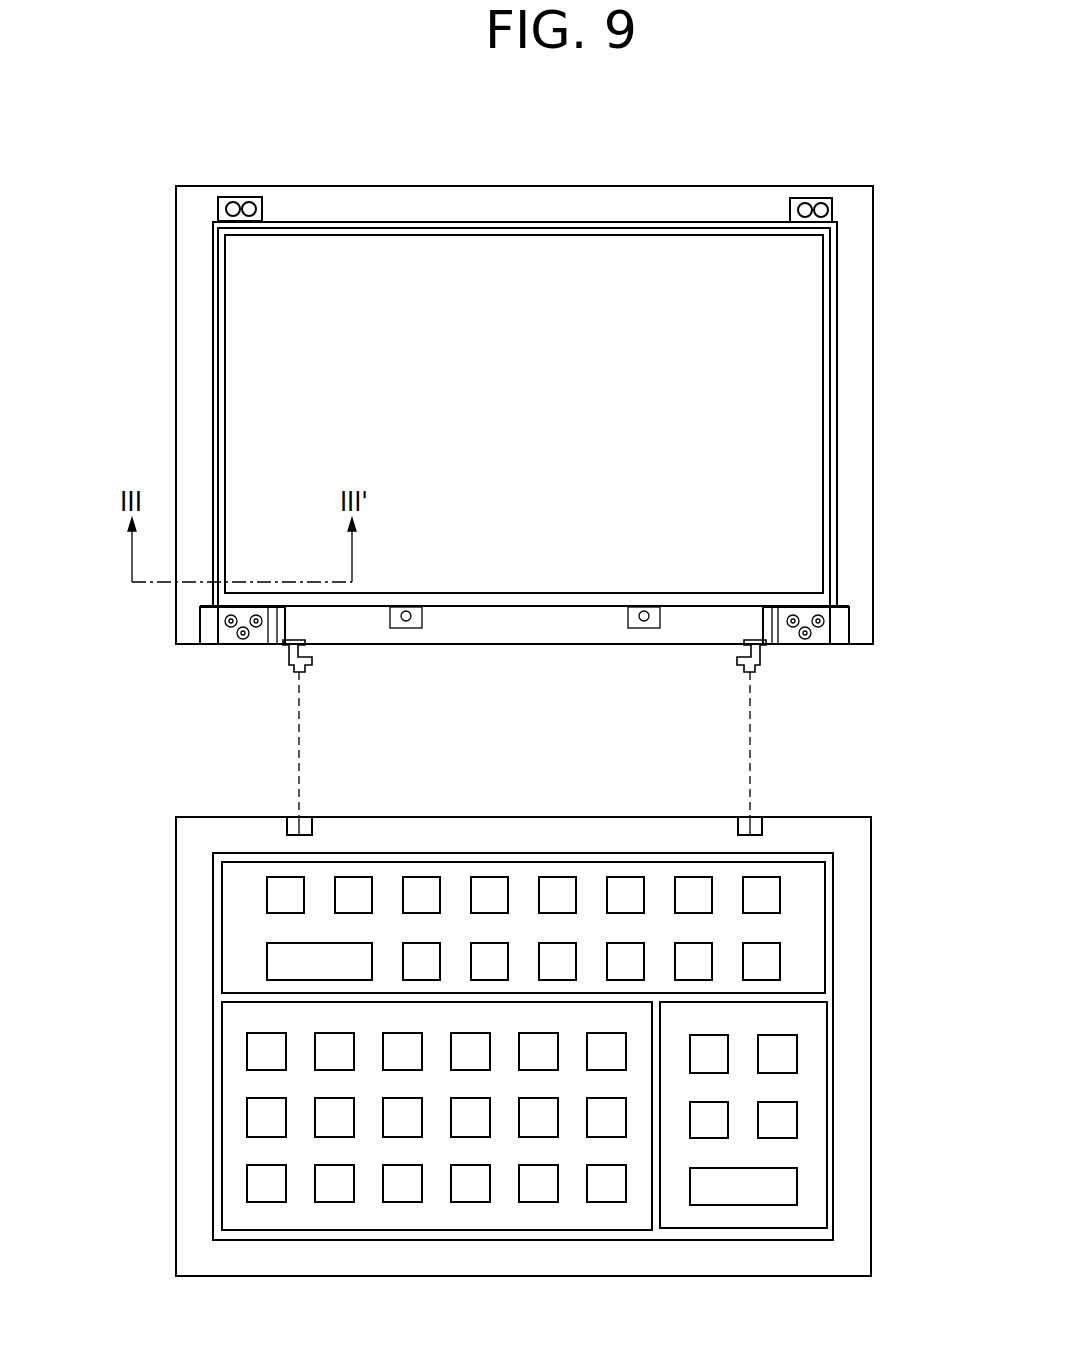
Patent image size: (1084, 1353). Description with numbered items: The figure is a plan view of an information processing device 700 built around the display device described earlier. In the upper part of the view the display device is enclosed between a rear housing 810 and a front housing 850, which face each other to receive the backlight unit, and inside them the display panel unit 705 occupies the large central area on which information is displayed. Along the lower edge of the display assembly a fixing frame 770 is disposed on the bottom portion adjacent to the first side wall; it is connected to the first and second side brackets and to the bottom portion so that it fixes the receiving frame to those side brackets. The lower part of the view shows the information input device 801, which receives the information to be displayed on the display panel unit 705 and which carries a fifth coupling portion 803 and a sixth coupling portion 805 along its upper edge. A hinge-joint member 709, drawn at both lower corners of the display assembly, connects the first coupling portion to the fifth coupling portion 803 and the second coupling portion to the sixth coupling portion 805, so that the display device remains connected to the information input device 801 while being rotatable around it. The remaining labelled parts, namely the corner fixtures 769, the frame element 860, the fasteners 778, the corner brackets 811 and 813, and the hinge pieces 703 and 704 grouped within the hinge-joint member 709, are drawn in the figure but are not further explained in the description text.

The information processing device 700 is at (565, 119).
The fixing bracket 769 is at (832, 210).
The front housing 850 is at (216, 322).
The top chassis 860 is at (837, 360).
The rear housing 810 is at (165, 423).
The display panel unit 705 is at (788, 462).
The fastening screws 778 is at (231, 620).
The left hinge bracket 811 is at (207, 633).
The right hinge bracket 813 is at (845, 632).
The hinge plate 704 is at (282, 640).
The hinge hook 703 is at (286, 652).
The hinge-joint member 709 is at (523, 712).
The fixing frame 770 is at (404, 628).
The fifth coupling portion 803 is at (290, 823).
The sixth coupling portion 805 is at (758, 824).
The information input device 801 is at (165, 1055).